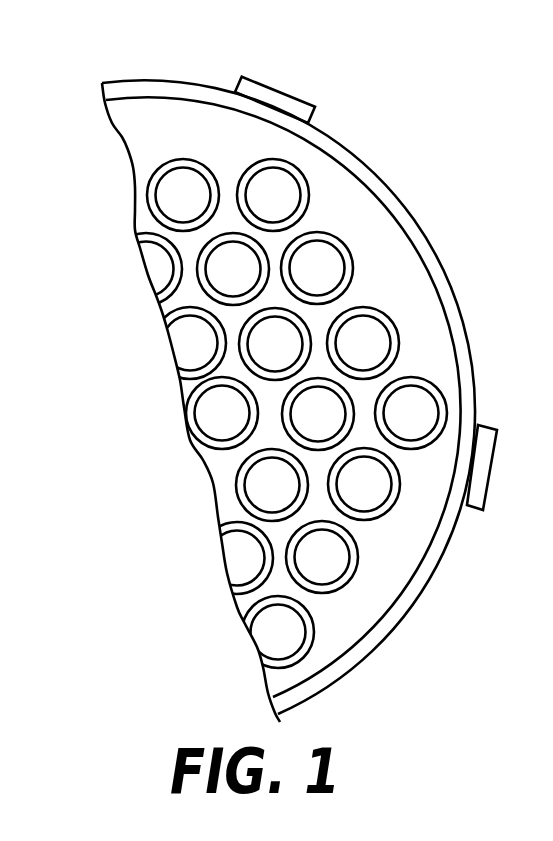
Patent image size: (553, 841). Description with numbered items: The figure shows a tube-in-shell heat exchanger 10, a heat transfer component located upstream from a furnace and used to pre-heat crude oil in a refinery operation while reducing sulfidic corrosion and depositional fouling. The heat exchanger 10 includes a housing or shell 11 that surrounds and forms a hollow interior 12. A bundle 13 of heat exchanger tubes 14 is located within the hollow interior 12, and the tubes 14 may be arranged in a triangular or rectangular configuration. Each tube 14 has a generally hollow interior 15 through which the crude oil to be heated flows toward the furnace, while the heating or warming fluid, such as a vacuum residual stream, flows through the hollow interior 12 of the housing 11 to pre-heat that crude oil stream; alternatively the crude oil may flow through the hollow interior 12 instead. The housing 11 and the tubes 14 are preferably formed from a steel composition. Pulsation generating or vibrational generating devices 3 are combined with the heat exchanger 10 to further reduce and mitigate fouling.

The tube-in-shell heat exchanger 10 is at (418, 178).
The housing or shell 11 is at (437, 270).
The hollow interior 12 is at (147, 137).
The bundle 13 is at (372, 532).
The heat exchanger tube 14 is at (395, 334).
The hollow interior of tube 15 is at (378, 352).
The pulsation or vibrational generating device 3 is at (281, 86).